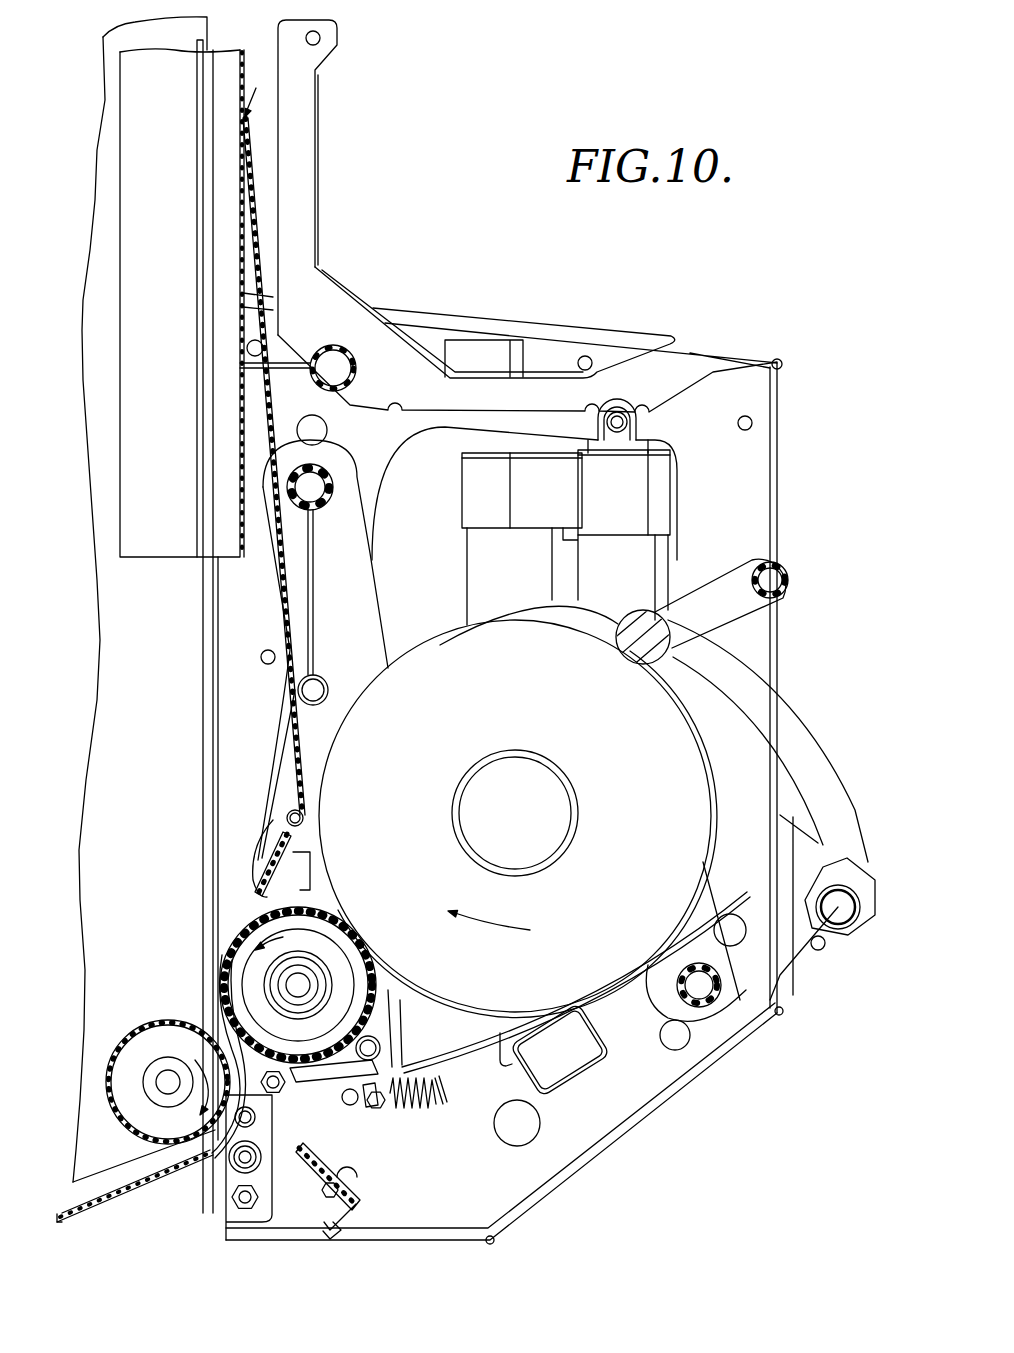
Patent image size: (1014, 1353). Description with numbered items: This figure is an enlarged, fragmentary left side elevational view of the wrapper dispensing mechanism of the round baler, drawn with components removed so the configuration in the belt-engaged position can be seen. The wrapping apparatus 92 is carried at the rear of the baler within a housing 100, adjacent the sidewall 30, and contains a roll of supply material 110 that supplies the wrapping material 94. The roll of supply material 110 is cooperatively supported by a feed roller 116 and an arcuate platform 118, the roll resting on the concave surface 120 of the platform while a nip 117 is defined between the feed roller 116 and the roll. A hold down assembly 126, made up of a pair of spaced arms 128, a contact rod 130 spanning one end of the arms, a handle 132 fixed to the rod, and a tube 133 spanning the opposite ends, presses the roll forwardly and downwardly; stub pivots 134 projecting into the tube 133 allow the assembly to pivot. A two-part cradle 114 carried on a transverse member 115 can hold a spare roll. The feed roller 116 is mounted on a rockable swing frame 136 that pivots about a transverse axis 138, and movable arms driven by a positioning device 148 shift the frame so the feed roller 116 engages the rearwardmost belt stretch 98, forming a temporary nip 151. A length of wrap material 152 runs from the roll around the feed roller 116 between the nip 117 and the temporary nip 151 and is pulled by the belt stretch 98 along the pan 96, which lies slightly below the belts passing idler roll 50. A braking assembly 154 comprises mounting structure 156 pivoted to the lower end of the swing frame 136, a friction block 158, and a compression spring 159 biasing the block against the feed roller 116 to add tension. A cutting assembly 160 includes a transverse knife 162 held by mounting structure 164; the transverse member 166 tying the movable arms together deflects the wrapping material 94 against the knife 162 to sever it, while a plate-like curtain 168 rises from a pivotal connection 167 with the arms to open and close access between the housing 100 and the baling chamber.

The sidewall 30 is at (100, 150).
The idler roll 50 is at (170, 1025).
The wrapping apparatus 92 is at (760, 340).
The wrapping material 94 is at (65, 1228).
The pan 96 is at (115, 1195).
The rearwardmost belt stretch 98 is at (204, 740).
The housing 100 is at (690, 1103).
The roll of supply material 110 is at (665, 742).
The two-part cradle 114 is at (298, 134).
The transverse member 115 is at (342, 370).
The feed roller 116 is at (356, 975).
The nip 117 is at (348, 920).
The platform 118 is at (560, 1050).
The concave surface 120 is at (610, 978).
The hold down assembly 126 is at (798, 655).
The arms 128 is at (803, 718).
The contact rod 130 is at (650, 615).
The handle 132 is at (758, 572).
The tube 133 is at (843, 915).
The stub pivots 134 is at (828, 912).
The swing frame 136 is at (343, 585).
The transverse axis 138 is at (318, 484).
The positioning device 148 is at (684, 484).
The temporary nip 151 is at (222, 970).
The length of wrap material 152 is at (408, 1000).
The braking assembly 154 is at (483, 1120).
The mounting structure 156 is at (380, 1118).
The friction block 158 is at (292, 1085).
The compression spring 159 is at (425, 1103).
The cutting assembly 160 is at (377, 1186).
The transverse knife 162 is at (318, 1143).
The mounting structure 164 is at (334, 1232).
The transverse member 166 is at (272, 877).
The pivotal connection 167 is at (302, 815).
The curtain 168 is at (266, 412).